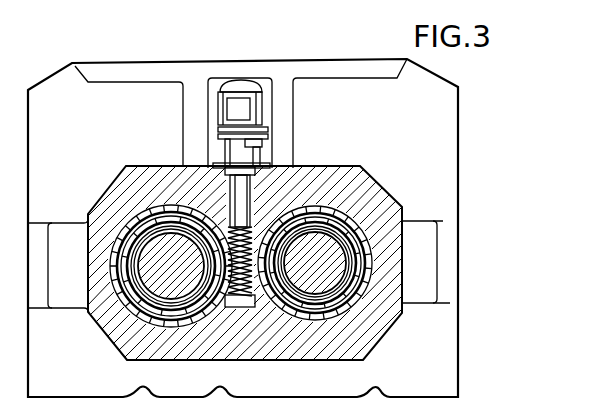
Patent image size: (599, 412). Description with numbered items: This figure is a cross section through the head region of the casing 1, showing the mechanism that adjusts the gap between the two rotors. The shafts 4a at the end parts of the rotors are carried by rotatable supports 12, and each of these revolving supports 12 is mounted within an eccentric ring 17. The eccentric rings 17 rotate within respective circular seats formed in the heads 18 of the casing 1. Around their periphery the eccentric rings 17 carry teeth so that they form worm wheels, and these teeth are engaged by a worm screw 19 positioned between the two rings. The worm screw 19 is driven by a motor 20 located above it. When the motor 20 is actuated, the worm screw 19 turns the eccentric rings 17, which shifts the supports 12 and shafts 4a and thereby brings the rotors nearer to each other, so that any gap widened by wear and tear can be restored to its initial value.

The casing 1 is at (453, 131).
The shafts 4a is at (130, 228).
The rotatable supports 12 is at (113, 352).
The eccentric rings 17 is at (198, 320).
The heads 18 is at (360, 168).
The worm screw 19 is at (295, 167).
The motor 20 is at (218, 110).